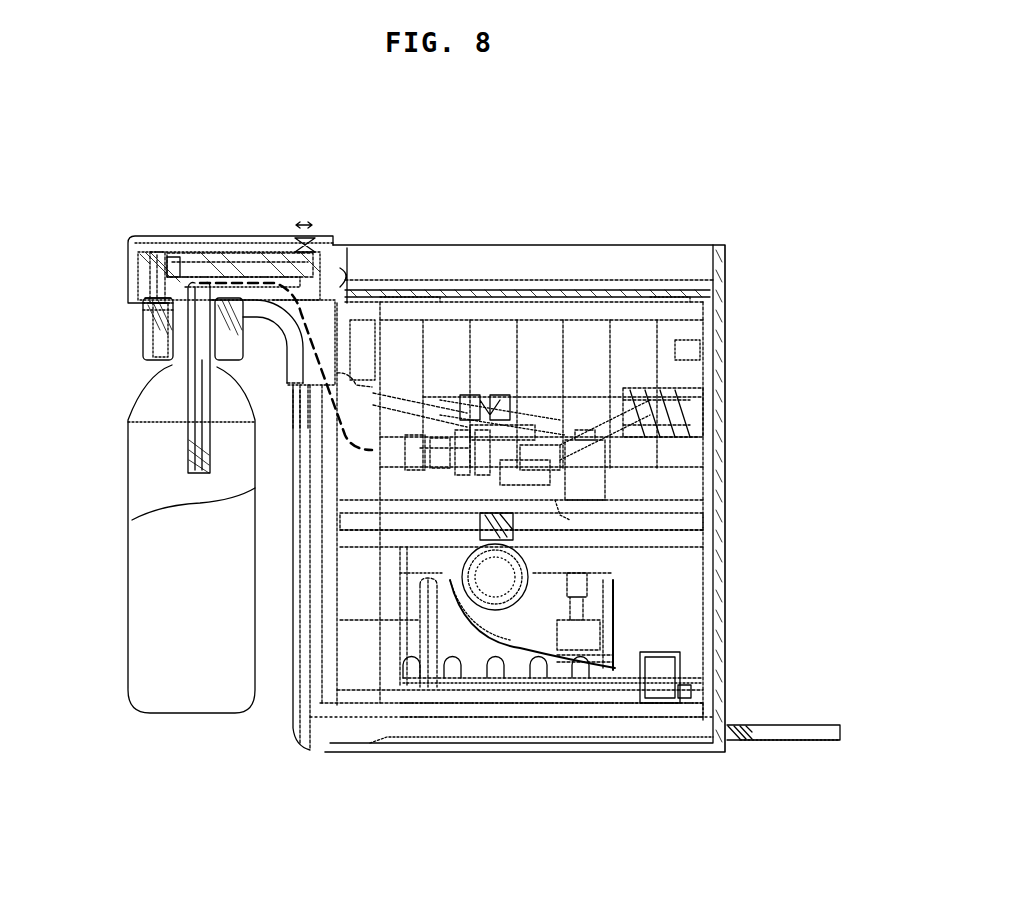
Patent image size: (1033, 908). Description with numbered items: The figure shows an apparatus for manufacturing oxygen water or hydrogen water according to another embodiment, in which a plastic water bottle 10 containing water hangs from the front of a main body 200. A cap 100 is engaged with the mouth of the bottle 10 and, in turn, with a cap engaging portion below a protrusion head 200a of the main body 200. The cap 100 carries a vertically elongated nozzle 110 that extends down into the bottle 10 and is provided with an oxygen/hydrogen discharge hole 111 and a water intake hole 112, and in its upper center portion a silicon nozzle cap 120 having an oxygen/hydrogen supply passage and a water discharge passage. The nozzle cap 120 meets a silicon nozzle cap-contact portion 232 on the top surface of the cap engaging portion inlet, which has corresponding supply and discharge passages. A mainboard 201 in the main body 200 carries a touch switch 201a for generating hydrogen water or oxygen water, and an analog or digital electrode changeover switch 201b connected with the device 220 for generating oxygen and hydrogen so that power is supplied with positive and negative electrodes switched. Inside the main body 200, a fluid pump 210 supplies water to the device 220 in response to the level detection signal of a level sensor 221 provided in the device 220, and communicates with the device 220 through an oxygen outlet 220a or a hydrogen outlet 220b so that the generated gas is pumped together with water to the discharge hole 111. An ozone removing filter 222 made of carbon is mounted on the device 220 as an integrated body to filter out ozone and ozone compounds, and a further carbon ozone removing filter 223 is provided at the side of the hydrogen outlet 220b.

The main body 200 is at (587, 238).
The protrusion head 200a is at (128, 268).
The mainboard 201 is at (240, 248).
The switch 201a is at (190, 243).
The electrode changeover switch 201b is at (303, 242).
The nozzle cap-contact portion 232 is at (172, 283).
The cap 100 is at (143, 348).
The nozzle cap 120 is at (143, 302).
The nozzle 110 is at (172, 365).
The plastic water bottle 10 is at (150, 498).
The oxygen/hydrogen discharge hole 111 is at (133, 517).
The water intake hole 112 is at (200, 447).
The fluid pump 210 is at (670, 406).
The device for generating oxygen and hydrogen 220 is at (560, 658).
The oxygen outlet 220a is at (500, 488).
The hydrogen outlet 220b is at (643, 698).
The level sensor 221 is at (590, 633).
The ozone removing filter 222 is at (500, 563).
The ozone removing filter 223 is at (690, 700).